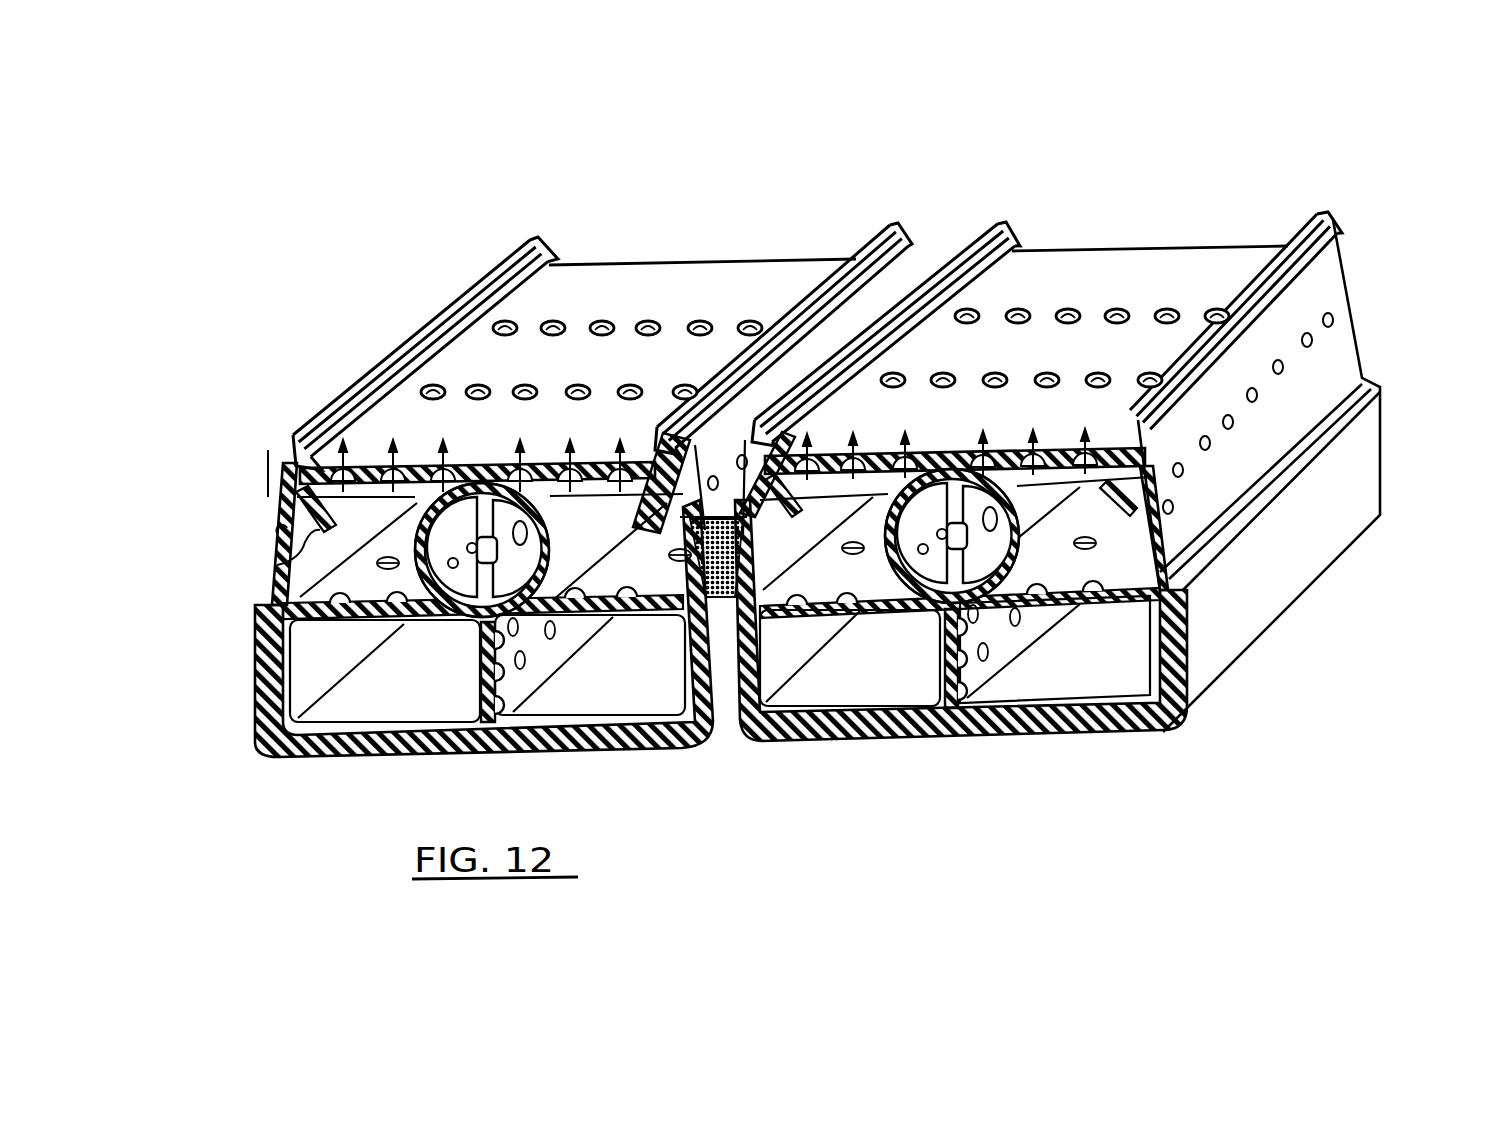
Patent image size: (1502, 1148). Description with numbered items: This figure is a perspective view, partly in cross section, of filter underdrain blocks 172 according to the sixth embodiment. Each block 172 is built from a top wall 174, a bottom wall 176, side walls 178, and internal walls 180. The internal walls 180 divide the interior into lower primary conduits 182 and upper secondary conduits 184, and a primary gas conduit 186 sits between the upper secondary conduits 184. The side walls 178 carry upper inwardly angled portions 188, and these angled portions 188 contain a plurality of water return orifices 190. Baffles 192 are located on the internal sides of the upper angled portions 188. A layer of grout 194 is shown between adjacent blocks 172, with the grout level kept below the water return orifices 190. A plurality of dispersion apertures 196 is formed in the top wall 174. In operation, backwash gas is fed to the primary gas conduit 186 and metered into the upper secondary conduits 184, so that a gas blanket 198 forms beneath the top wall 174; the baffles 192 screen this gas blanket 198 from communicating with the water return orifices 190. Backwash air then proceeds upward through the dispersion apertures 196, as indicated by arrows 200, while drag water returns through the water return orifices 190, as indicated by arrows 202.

The block 172 is at (357, 305).
The top wall 174 is at (715, 280).
The bottom wall 176 is at (513, 744).
The side wall 178 is at (263, 620).
The internal wall 180 is at (363, 617).
The lower primary conduit 182 is at (632, 701).
The upper secondary conduit 184 is at (379, 602).
The primary gas conduit 186 is at (415, 580).
The upper inwardly angled portion 188 is at (290, 447).
The water return orifice 190 is at (285, 527).
The baffle 192 is at (277, 565).
The grout 194 is at (683, 605).
The dispersion aperture 196 is at (628, 384).
The gas blanket 198 is at (287, 473).
The arrow 200 is at (445, 450).
The arrow 202 is at (292, 517).